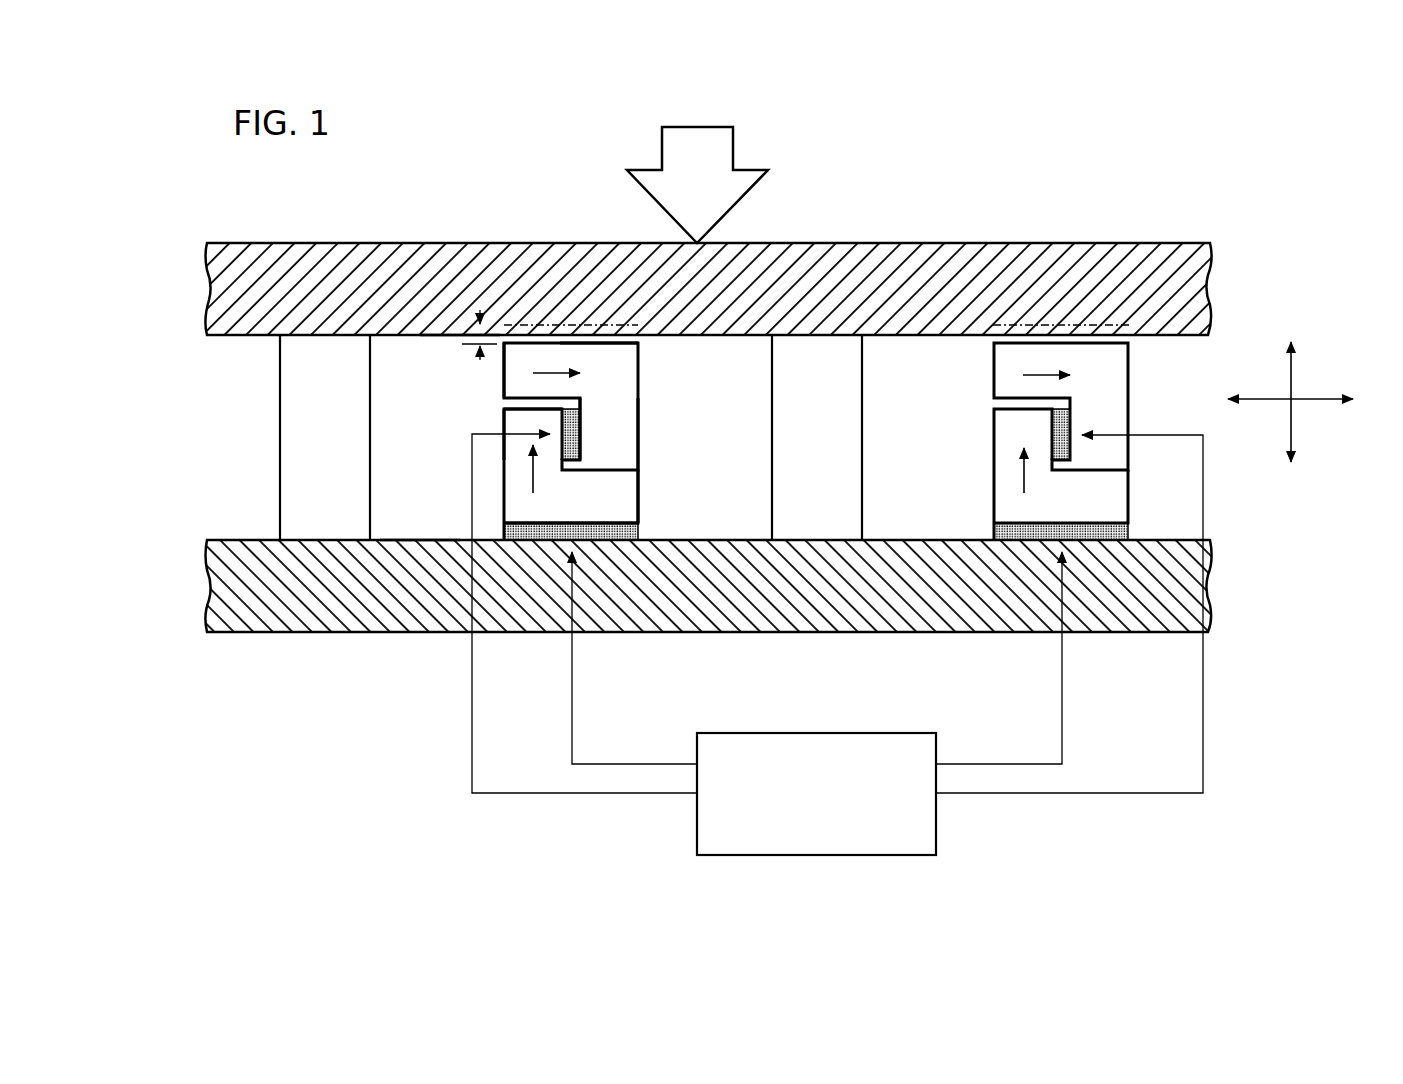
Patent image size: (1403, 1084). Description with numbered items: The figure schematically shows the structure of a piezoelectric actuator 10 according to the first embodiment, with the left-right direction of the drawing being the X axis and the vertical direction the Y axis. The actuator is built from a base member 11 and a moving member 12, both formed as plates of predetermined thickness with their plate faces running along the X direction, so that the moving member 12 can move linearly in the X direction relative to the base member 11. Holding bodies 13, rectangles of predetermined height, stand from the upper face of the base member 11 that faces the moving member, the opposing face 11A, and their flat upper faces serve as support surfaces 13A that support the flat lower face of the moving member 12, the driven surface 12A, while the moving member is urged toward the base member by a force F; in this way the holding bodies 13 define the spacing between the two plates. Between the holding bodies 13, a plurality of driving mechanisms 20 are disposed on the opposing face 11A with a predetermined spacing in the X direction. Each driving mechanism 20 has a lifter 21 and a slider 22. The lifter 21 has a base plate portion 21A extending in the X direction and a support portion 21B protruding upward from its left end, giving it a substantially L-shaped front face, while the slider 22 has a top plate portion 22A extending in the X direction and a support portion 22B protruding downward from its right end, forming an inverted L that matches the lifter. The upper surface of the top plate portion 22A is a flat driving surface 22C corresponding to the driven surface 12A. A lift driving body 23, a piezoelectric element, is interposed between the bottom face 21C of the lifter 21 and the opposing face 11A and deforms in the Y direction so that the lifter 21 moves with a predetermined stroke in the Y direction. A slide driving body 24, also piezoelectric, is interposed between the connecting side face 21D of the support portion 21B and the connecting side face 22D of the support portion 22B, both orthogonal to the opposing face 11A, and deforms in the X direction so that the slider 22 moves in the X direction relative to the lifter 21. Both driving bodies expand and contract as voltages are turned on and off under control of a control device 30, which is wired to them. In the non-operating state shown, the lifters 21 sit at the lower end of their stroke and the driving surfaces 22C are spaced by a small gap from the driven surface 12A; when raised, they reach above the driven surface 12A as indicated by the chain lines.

The piezoelectric actuator 10 is at (882, 176).
The base member 11 is at (328, 634).
The opposing face 11A is at (403, 537).
The moving member 12 is at (428, 240).
The driven surface 12A is at (402, 333).
The holding body 13 is at (278, 460).
The support surface 13A is at (310, 320).
The driving mechanism 20 is at (661, 383).
The lifter 21 is at (414, 505).
The base plate portion 21A is at (587, 493).
The support portion 21B is at (517, 420).
The bottom face 21C is at (516, 520).
The connecting side face 21D is at (567, 455).
The slider 22 is at (478, 172).
The top plate portion 22A is at (557, 357).
The support portion 22B is at (612, 417).
The driving surface 22C is at (612, 343).
The connecting side face 22D is at (560, 427).
The lift driving body 23 is at (610, 524).
The slide driving body 24 is at (582, 424).
The control device 30 is at (872, 732).